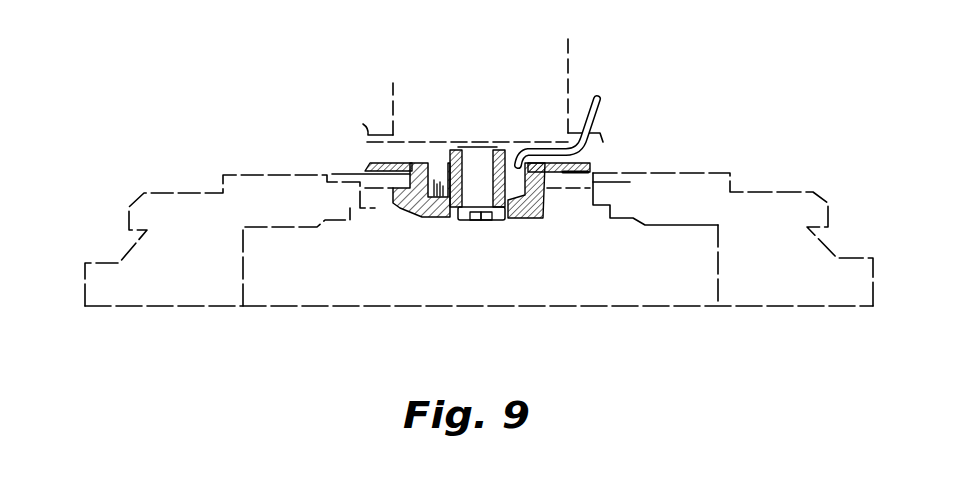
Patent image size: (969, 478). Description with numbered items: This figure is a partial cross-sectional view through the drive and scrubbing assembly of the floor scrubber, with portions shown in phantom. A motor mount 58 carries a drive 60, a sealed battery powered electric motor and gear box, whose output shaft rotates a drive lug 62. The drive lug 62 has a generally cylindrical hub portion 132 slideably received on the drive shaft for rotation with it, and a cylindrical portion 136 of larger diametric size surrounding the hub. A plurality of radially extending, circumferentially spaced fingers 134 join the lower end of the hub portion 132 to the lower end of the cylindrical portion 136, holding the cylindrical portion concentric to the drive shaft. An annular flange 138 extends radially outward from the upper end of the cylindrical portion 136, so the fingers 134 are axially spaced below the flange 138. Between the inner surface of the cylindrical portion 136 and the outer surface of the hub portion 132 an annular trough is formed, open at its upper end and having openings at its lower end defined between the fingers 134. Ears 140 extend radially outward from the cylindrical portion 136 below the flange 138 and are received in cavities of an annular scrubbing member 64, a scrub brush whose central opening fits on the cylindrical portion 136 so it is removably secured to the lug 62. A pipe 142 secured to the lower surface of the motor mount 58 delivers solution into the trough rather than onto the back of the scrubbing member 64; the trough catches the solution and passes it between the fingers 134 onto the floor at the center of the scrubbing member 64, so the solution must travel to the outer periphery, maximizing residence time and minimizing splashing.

The motor mount 58 is at (363, 124).
The drive 60 is at (390, 118).
The drive lug 62 is at (433, 219).
The scrubbing member 64 is at (153, 309).
The hub portion 132 is at (510, 140).
The fingers 134 is at (447, 221).
The cylindrical portion 136 is at (548, 203).
The annular flange 138 is at (593, 167).
The ears 140 is at (407, 209).
The pipe 142 is at (603, 97).